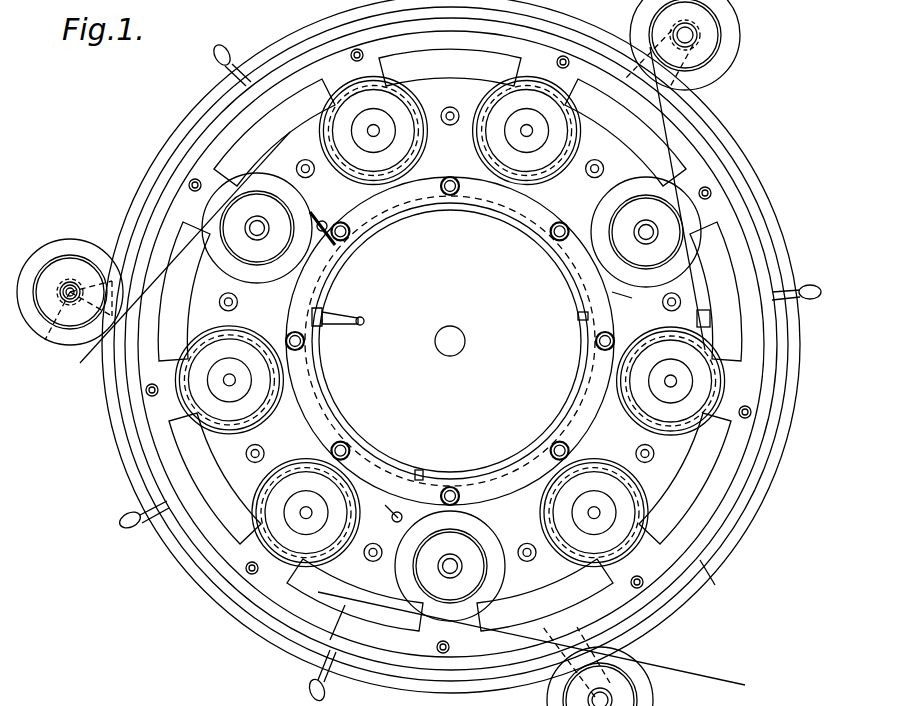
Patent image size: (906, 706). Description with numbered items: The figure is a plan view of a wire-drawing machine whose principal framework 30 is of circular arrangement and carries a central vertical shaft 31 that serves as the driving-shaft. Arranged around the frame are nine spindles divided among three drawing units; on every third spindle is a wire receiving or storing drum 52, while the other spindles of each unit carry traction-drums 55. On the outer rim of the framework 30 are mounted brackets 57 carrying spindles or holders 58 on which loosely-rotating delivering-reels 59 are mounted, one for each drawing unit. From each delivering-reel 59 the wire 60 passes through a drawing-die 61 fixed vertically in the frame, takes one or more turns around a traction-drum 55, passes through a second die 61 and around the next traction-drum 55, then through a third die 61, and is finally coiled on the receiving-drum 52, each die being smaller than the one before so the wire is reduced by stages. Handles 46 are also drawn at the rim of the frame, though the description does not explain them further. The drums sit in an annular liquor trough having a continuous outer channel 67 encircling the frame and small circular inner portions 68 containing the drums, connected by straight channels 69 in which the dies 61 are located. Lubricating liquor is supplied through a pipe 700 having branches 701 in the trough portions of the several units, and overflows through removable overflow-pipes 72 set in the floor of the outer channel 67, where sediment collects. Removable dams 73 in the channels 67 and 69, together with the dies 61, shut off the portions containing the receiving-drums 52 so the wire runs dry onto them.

The framework 30 is at (198, 108).
The vertical shaft 31 is at (452, 330).
The handle 46 is at (225, 48).
The receiving-drum 52 is at (318, 256).
The traction-drum 55 is at (395, 178).
The bracket 57 is at (58, 340).
The spindle 58 is at (65, 282).
The delivering-reel 59 is at (75, 240).
The wire 60 is at (165, 535).
The drawing-die 61 is at (225, 440).
The outer channel 67 is at (714, 584).
The inner trough portion 68 is at (425, 490).
The straight channel 69 is at (333, 622).
The overflow-pipe 72 is at (245, 572).
The removable dam 73 is at (215, 152).
The pipe 700 is at (330, 310).
The branch 701 is at (324, 212).